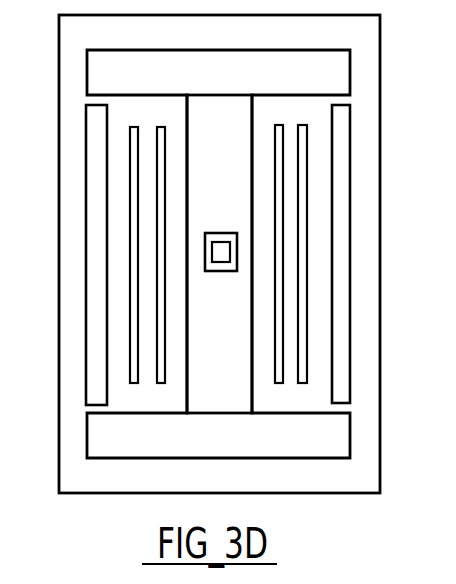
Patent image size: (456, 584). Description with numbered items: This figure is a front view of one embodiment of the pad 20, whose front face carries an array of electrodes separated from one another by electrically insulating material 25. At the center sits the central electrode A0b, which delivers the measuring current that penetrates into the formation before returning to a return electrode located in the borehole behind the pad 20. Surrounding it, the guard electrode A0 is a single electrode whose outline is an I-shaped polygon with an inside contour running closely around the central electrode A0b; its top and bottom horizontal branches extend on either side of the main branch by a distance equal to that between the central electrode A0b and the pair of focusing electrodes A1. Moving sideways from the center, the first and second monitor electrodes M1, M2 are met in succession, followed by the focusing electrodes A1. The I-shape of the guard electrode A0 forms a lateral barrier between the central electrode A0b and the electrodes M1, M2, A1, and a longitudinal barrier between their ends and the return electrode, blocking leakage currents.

The pad 20 is at (380, 126).
The electrically insulating material 25 is at (318, 40).
The guard electrode A0 is at (219, 254).
The central electrode A0b is at (218, 262).
The focusing electrode A1 is at (97, 137).
The first monitor electrode M1 is at (160, 213).
The second monitor electrode M2 is at (137, 311).